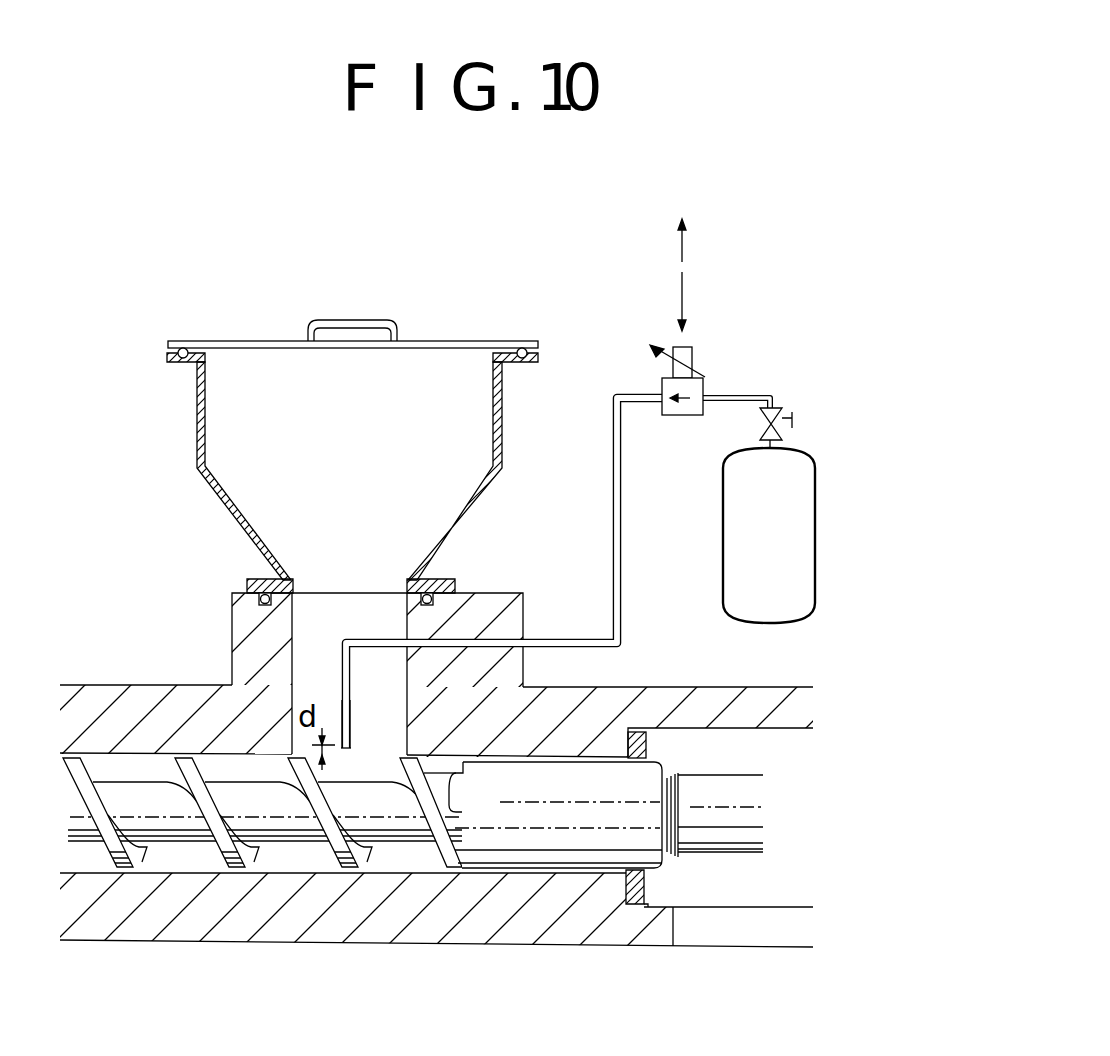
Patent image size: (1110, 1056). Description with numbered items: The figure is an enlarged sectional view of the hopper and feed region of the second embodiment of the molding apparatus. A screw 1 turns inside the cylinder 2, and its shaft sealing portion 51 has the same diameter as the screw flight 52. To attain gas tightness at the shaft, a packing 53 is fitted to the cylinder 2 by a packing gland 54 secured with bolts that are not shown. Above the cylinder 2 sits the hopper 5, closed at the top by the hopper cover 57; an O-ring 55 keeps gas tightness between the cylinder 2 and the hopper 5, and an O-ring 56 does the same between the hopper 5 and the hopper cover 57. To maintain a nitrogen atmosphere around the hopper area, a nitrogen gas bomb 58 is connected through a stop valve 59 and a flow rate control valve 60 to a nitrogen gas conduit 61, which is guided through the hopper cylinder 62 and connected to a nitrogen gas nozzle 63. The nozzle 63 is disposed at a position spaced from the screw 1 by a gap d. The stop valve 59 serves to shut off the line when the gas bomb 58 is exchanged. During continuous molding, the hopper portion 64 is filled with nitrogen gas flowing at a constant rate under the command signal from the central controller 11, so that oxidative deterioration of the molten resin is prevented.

The screw 1 is at (178, 832).
The cylinder 2 is at (117, 700).
The hopper 5 is at (197, 452).
The central controller 11 is at (708, 275).
The shaft sealing portion 51 is at (500, 845).
The screw flight 52 is at (250, 868).
The packing 53 is at (626, 884).
The packing gland 54 is at (644, 906).
The O-ring 55 is at (267, 604).
The O-ring 56 is at (520, 347).
The hopper cover 57 is at (436, 341).
The nitrogen gas bomb 58 is at (815, 558).
The stop valve 59 is at (771, 406).
The flow rate control valve 60 is at (708, 383).
The nitrogen gas conduit 61 is at (730, 402).
The hopper cylinder 62 is at (503, 607).
The nitrogen gas nozzle 63 is at (346, 749).
The hopper portion 64 is at (313, 597).